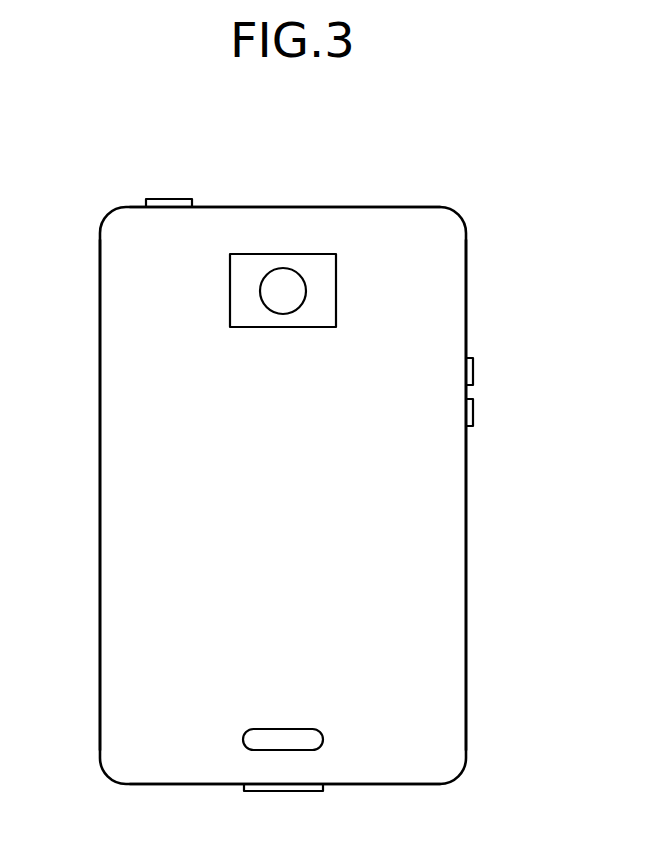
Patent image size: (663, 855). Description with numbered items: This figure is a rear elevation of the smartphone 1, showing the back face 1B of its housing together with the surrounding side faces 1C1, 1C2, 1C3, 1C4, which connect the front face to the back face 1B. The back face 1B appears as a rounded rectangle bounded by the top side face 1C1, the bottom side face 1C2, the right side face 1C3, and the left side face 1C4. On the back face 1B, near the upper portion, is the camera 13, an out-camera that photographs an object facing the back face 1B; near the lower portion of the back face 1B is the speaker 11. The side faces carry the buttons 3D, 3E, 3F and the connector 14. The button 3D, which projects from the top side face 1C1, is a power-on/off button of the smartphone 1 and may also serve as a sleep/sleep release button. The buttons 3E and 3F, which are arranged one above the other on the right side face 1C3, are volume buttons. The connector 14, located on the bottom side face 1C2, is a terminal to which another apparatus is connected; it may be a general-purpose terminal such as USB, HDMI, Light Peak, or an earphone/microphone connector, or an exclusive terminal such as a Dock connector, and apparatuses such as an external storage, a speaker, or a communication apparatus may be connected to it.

The smartphone 1 is at (487, 174).
The back face 1B is at (130, 452).
The side face 1C1 is at (377, 206).
The side face 1C2 is at (390, 786).
The side face 1C3 is at (467, 637).
The side face 1C4 is at (99, 580).
The button 3D is at (170, 198).
The button 3E is at (474, 370).
The button 3F is at (474, 412).
The speaker 11 is at (242, 739).
The camera 13 is at (283, 290).
The connector 14 is at (276, 792).